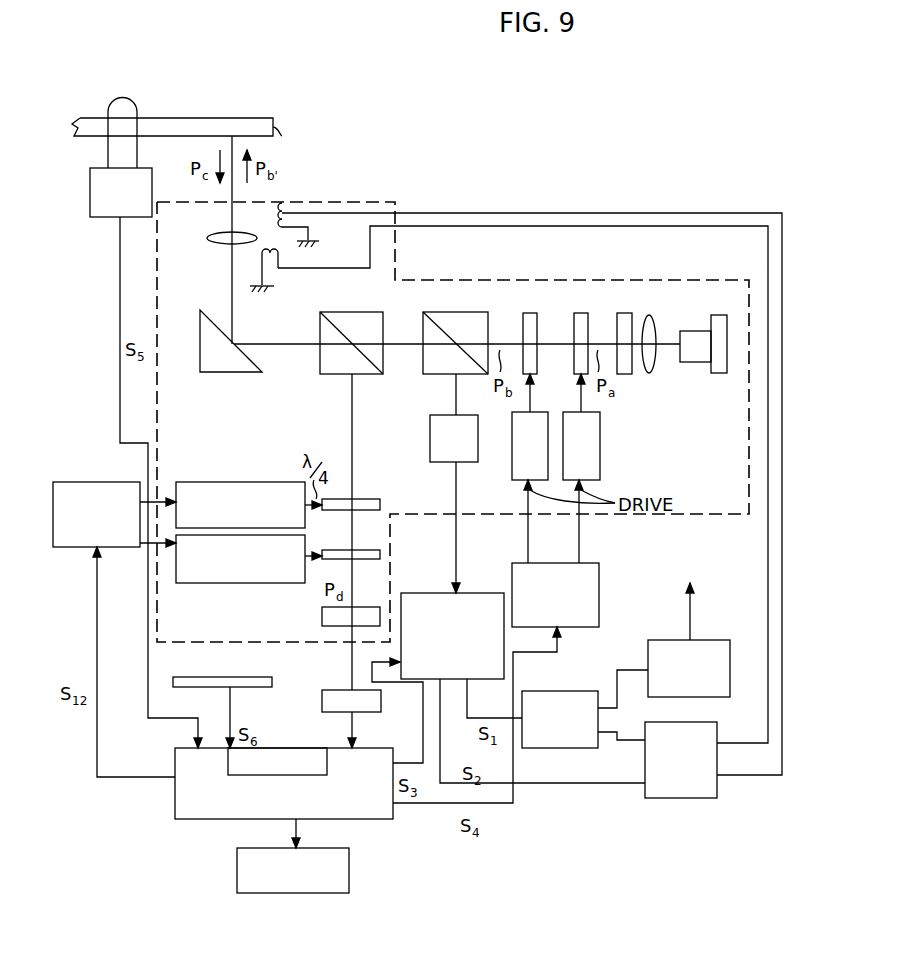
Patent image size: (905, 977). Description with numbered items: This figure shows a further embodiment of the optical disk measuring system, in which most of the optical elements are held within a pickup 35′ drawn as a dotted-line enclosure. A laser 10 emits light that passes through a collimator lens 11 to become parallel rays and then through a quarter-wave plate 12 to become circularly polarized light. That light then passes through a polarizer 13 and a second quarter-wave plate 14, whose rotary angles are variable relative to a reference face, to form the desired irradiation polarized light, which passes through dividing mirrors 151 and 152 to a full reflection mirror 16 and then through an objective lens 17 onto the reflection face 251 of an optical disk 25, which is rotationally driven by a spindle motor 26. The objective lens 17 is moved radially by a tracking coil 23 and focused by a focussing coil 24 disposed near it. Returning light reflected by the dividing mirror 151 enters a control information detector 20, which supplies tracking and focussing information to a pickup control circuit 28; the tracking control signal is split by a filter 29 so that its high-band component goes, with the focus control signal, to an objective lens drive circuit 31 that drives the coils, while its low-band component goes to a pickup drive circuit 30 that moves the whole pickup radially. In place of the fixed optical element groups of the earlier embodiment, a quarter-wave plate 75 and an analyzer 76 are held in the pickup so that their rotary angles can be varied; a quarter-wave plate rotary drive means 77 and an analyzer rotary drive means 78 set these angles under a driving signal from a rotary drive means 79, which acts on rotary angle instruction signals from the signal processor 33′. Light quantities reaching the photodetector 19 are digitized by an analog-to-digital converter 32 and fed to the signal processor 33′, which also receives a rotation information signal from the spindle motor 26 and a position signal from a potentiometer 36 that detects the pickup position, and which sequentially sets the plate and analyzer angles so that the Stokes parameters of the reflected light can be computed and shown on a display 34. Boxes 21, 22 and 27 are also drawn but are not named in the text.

The laser 10 is at (697, 358).
The collimator lens 11 is at (654, 328).
The λ/4 plate 12 is at (626, 313).
The polarizer 13 is at (582, 313).
The λ/4 plate 14 is at (532, 313).
The dividing mirror 151 is at (452, 312).
The dividing mirror 152 is at (338, 312).
The full reflection mirror 16 is at (232, 372).
The objective lens 17 is at (225, 243).
The photodetector 19 is at (322, 617).
The control information detector 20 is at (437, 462).
The rotary drive mechanism for plate 13 21 is at (600, 462).
The rotary drive mechanism for plate 14 22 is at (520, 466).
The tracking coil 23 is at (282, 268).
The focussing coil 24 is at (283, 204).
The optical disk 25 is at (196, 118).
The reflection face 251 is at (284, 138).
The spindle motor 26 is at (108, 218).
The rotary drive circuit 27 is at (600, 610).
The pickup control circuit 28 is at (435, 593).
The filter 29 is at (570, 748).
The pickup drive circuit 30 is at (730, 642).
The objective lens drive circuit 31 is at (666, 798).
The analog-to-digital converter 32 is at (360, 712).
The signal processor 33′ is at (258, 809).
The display 34 is at (322, 893).
The pickup 35′ is at (390, 201).
The potentiometer 36 is at (258, 687).
The λ/4 plate 75 is at (362, 499).
The analyzer 76 is at (334, 550).
The λ/4 plate rotary drive means 77 is at (232, 482).
The analyzer rotary drive means 78 is at (244, 583).
The rotary drive means 79 is at (80, 547).